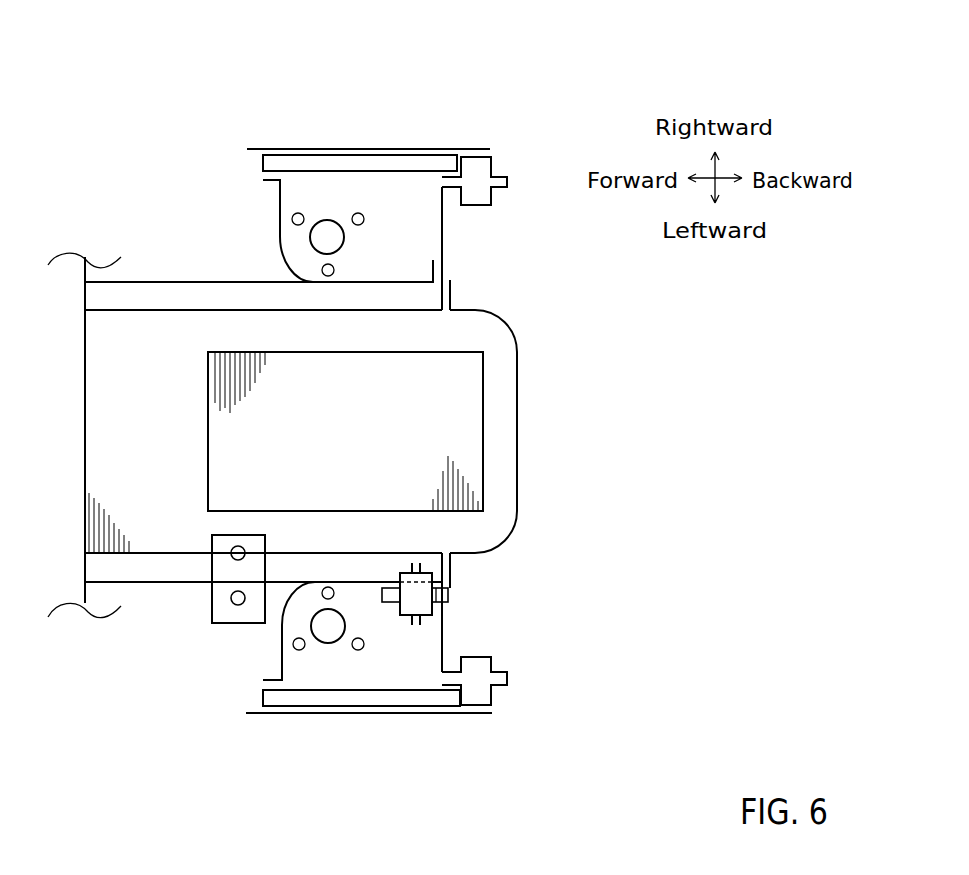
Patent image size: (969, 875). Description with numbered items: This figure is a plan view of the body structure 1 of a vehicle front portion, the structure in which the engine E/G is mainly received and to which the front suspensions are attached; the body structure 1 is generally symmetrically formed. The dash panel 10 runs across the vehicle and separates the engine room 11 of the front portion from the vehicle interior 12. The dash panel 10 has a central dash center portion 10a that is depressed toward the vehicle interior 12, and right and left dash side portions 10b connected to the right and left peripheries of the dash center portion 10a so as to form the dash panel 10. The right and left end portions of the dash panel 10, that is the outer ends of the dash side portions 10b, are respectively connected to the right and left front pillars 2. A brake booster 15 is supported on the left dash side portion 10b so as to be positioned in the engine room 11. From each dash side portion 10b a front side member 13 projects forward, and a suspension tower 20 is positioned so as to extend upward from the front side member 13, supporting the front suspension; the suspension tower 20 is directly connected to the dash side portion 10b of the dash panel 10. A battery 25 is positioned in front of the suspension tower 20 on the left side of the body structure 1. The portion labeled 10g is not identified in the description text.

The body structure 1 is at (274, 740).
The front pillar 2 is at (477, 172).
The dash panel 10 is at (519, 540).
The dash center portion 10a is at (517, 467).
The upper pipe portion 10g is at (443, 243).
The dash side portion 10b is at (443, 628).
The engine room 11 is at (173, 439).
The vehicle interior 12 is at (623, 431).
The front side member 13 is at (167, 297).
The brake booster 15 is at (413, 592).
The suspension tower 20 is at (328, 207).
The battery 25 is at (215, 608).